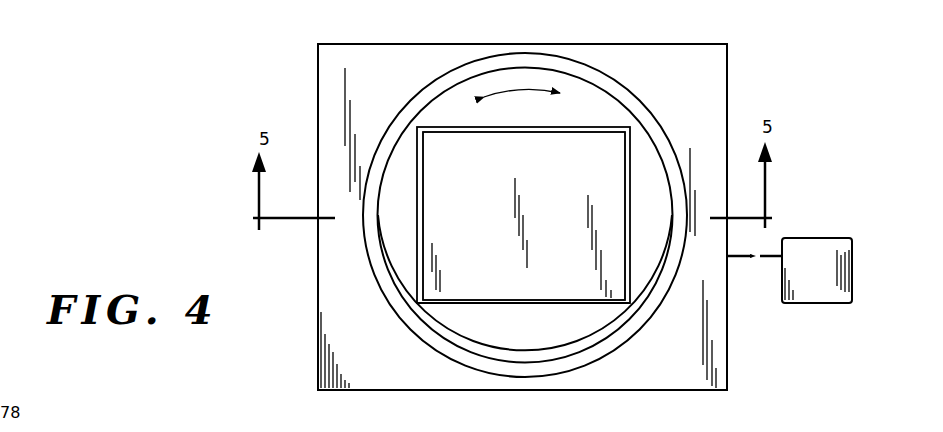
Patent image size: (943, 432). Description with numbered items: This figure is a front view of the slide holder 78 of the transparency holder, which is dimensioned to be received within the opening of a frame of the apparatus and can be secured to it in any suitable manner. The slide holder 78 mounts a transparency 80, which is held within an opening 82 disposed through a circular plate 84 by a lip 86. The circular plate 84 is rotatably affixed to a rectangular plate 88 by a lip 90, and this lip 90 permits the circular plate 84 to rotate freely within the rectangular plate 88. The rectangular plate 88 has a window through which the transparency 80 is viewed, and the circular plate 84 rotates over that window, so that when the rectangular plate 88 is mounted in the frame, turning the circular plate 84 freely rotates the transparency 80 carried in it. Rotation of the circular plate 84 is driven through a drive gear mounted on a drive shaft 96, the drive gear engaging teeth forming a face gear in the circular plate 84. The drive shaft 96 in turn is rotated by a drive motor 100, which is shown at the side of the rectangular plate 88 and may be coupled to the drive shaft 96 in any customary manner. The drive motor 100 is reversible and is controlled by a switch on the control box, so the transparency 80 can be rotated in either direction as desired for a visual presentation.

The slide holder 78 is at (252, 72).
The transparency 80 is at (478, 178).
The opening 82 is at (486, 298).
The circular plate 84 is at (561, 337).
The lip 86 is at (628, 193).
The rectangular plate 88 is at (665, 390).
The lip 90 is at (642, 322).
The drive shaft 96 is at (745, 262).
The drive motor 100 is at (792, 238).